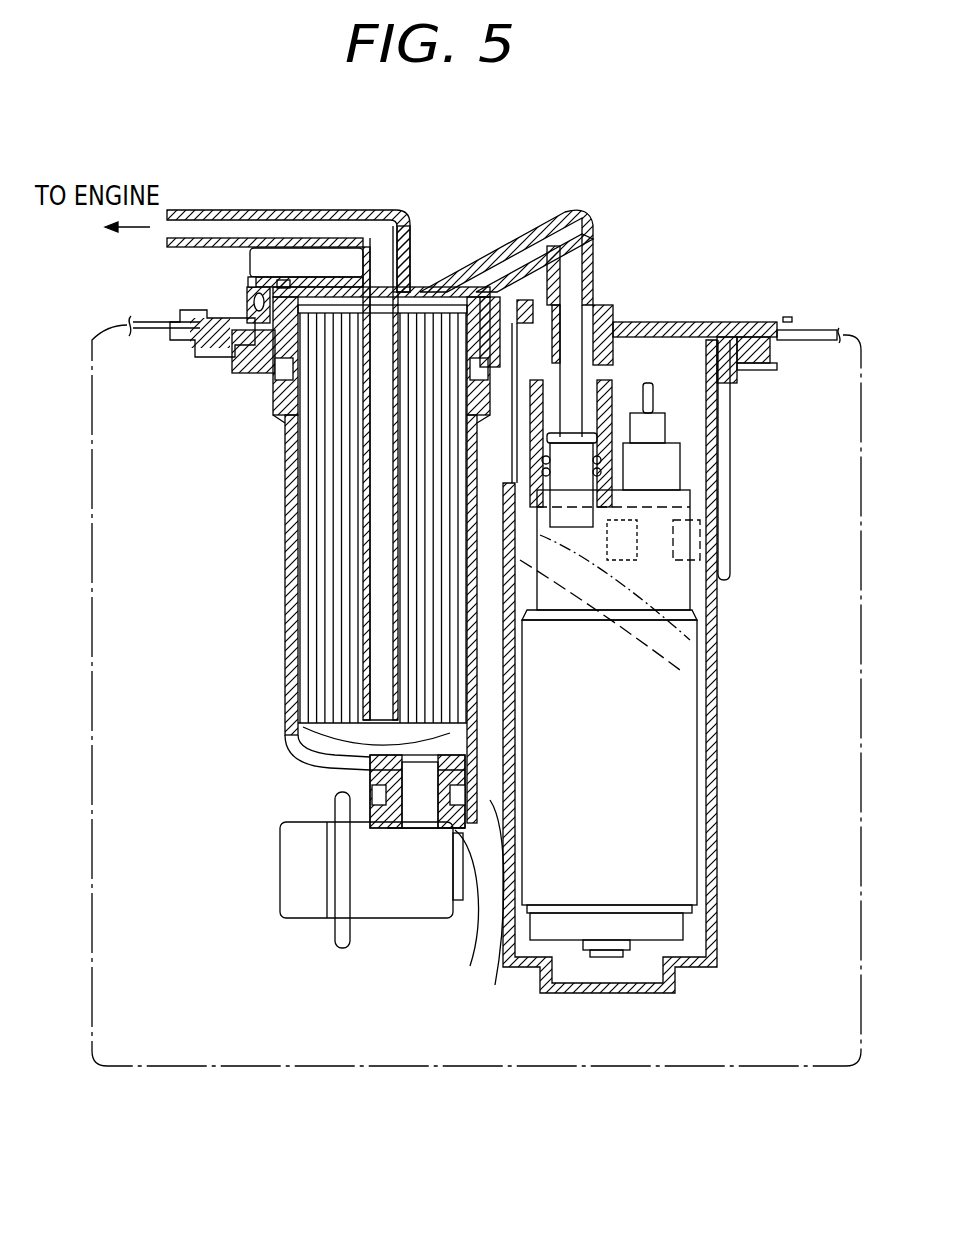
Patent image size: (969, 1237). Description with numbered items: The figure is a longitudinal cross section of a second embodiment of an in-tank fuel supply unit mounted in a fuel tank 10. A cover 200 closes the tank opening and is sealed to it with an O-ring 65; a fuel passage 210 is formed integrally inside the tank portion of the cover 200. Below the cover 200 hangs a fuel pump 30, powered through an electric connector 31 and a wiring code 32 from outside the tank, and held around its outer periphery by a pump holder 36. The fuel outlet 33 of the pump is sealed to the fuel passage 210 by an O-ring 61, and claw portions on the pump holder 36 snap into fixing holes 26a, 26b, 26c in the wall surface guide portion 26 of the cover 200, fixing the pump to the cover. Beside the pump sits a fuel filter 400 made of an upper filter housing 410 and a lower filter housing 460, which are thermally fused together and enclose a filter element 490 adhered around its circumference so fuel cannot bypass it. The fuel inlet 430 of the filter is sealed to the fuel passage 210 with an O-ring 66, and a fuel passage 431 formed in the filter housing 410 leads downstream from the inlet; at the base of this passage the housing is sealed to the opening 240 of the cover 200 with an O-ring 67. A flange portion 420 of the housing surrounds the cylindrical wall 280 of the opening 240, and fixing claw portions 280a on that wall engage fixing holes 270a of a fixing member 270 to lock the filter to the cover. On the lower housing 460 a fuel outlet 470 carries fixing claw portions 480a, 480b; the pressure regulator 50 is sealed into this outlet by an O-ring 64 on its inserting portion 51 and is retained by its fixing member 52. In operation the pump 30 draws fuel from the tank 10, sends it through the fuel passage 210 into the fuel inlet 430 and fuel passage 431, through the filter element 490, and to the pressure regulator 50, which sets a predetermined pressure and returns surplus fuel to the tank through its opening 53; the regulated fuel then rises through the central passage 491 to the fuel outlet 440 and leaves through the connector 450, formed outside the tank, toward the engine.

The fuel tank 10 is at (815, 322).
The wall surface guide portion 26 is at (727, 458).
The fixing hole 26a is at (697, 533).
The fixing hole 26b is at (700, 585).
The fixing hole 26c is at (690, 660).
The fuel pump 30 is at (680, 755).
The electric connector 31 is at (658, 457).
The wiring code 32 is at (652, 388).
The fuel outlet 33 is at (603, 345).
The pump holder 36 is at (720, 818).
The pressure regulator 50 is at (372, 920).
The inserting portion 51 is at (398, 833).
The fixing member 52 is at (508, 912).
The opening 53 is at (449, 919).
The O-ring 61 is at (598, 472).
The O-ring 64 is at (368, 745).
The O-ring 65 is at (752, 340).
The O-ring 66 is at (577, 465).
The O-ring 67 is at (300, 287).
The cover 200 is at (728, 316).
The fuel passage 210 is at (697, 322).
The opening 240 is at (255, 372).
The fixing member 270 is at (270, 280).
The fixing hole 270a is at (247, 288).
The cylindrical wall 280 is at (225, 345).
The fixing claw portion 280a is at (247, 307).
The fuel filter 400 is at (337, 524).
The filter housing 410 is at (278, 400).
The flange portion 420 is at (255, 295).
The fuel inlet 430 is at (596, 278).
The fuel passage 431 is at (510, 235).
The fuel outlet 440 is at (405, 235).
The connector 450 is at (200, 210).
The filter housing 460 is at (298, 703).
The fuel outlet 470 is at (336, 903).
The fixing claw portion 480a is at (460, 830).
The fixing claw portion 480b is at (372, 795).
The filter element 490 is at (318, 610).
The central passage 491 is at (366, 640).